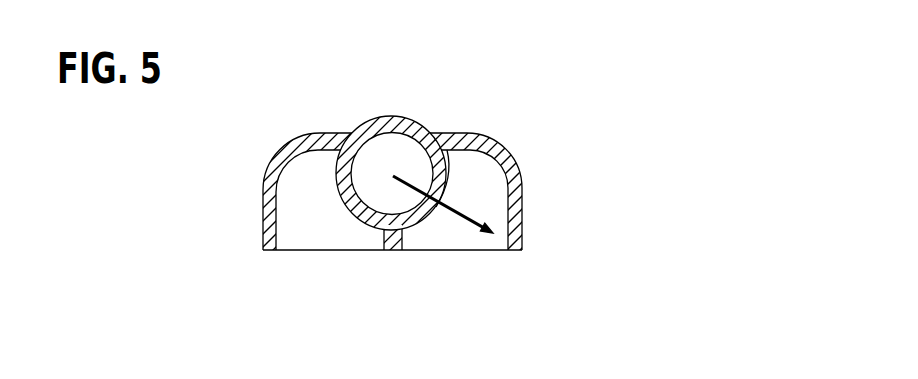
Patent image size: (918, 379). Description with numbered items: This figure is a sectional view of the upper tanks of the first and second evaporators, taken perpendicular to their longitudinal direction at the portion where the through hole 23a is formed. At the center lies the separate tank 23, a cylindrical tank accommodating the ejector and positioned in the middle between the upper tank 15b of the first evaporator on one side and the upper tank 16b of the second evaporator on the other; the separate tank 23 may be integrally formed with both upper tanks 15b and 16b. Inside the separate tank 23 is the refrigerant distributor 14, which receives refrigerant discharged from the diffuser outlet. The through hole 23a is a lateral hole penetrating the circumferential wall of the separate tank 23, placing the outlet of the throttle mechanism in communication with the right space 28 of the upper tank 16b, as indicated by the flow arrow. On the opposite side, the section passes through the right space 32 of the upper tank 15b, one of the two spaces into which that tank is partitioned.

The refrigerant distributor 14 is at (387, 152).
The separate tank 23 is at (413, 127).
The through hole 23a is at (490, 157).
The upper tank 15b is at (268, 180).
The upper tank 16b is at (447, 172).
The right space 28 is at (487, 204).
The right space 32 is at (338, 228).